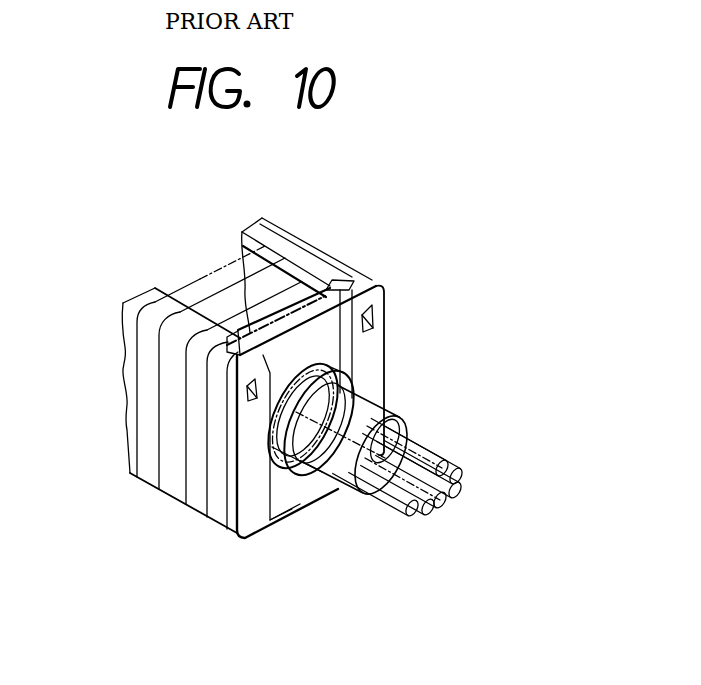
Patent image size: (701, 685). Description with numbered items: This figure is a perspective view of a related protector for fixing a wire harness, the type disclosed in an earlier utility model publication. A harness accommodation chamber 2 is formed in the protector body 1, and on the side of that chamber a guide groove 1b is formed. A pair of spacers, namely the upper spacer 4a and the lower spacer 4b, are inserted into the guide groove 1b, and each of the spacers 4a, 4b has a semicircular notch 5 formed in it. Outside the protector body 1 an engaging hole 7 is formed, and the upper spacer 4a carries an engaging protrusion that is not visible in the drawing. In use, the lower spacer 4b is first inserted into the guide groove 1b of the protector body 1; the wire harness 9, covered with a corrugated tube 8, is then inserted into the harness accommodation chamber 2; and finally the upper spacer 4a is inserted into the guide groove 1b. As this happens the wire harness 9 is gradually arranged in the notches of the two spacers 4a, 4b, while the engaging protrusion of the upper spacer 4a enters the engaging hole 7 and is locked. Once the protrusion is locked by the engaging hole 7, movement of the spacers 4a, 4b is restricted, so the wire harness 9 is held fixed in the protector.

The protector body 1 is at (252, 516).
The guide groove 1b is at (336, 284).
The harness accommodation chamber 2 is at (213, 272).
The upper spacer 4a is at (328, 350).
The lower spacer 4b is at (289, 470).
The semicircular notch 5 is at (300, 400).
The engaging hole 7 is at (375, 313).
The corrugated tube 8 is at (318, 484).
The wire harness 9 is at (452, 470).